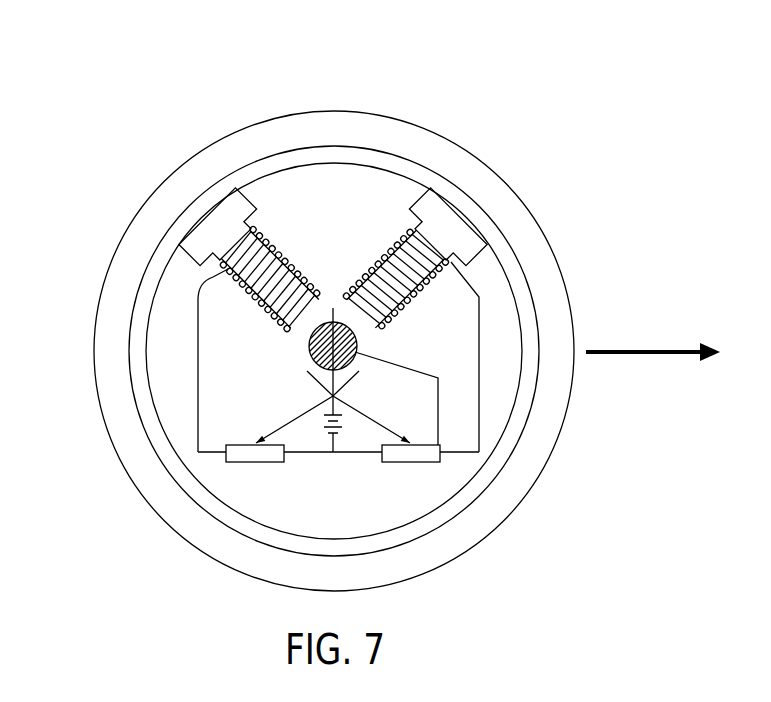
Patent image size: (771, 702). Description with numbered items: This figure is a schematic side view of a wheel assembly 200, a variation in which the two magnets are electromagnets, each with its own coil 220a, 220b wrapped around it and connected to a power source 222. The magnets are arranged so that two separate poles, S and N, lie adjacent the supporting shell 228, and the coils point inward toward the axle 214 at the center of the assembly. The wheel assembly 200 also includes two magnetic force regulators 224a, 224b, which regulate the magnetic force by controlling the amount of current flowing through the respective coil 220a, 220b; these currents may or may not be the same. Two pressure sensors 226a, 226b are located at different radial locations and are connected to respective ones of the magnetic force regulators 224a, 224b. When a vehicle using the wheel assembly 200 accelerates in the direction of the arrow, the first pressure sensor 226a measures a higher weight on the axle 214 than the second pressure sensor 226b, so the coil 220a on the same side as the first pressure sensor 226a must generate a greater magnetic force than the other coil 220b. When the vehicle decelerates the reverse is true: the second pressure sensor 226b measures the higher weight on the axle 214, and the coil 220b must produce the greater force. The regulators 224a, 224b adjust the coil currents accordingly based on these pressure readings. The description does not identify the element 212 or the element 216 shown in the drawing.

The wheel assembly 200 is at (437, 63).
The outer housing 212 is at (497, 202).
The supporting shell 228 is at (527, 328).
The coil 220a is at (262, 252).
The coil 220b is at (397, 262).
The coil winding 216 is at (243, 303).
The axle 214 is at (357, 343).
The first pressure sensor 226a is at (306, 373).
The second pressure sensor 226b is at (362, 373).
The magnetic force regulator 224a is at (227, 465).
The magnetic force regulator 224b is at (428, 463).
The power source 222 is at (328, 433).